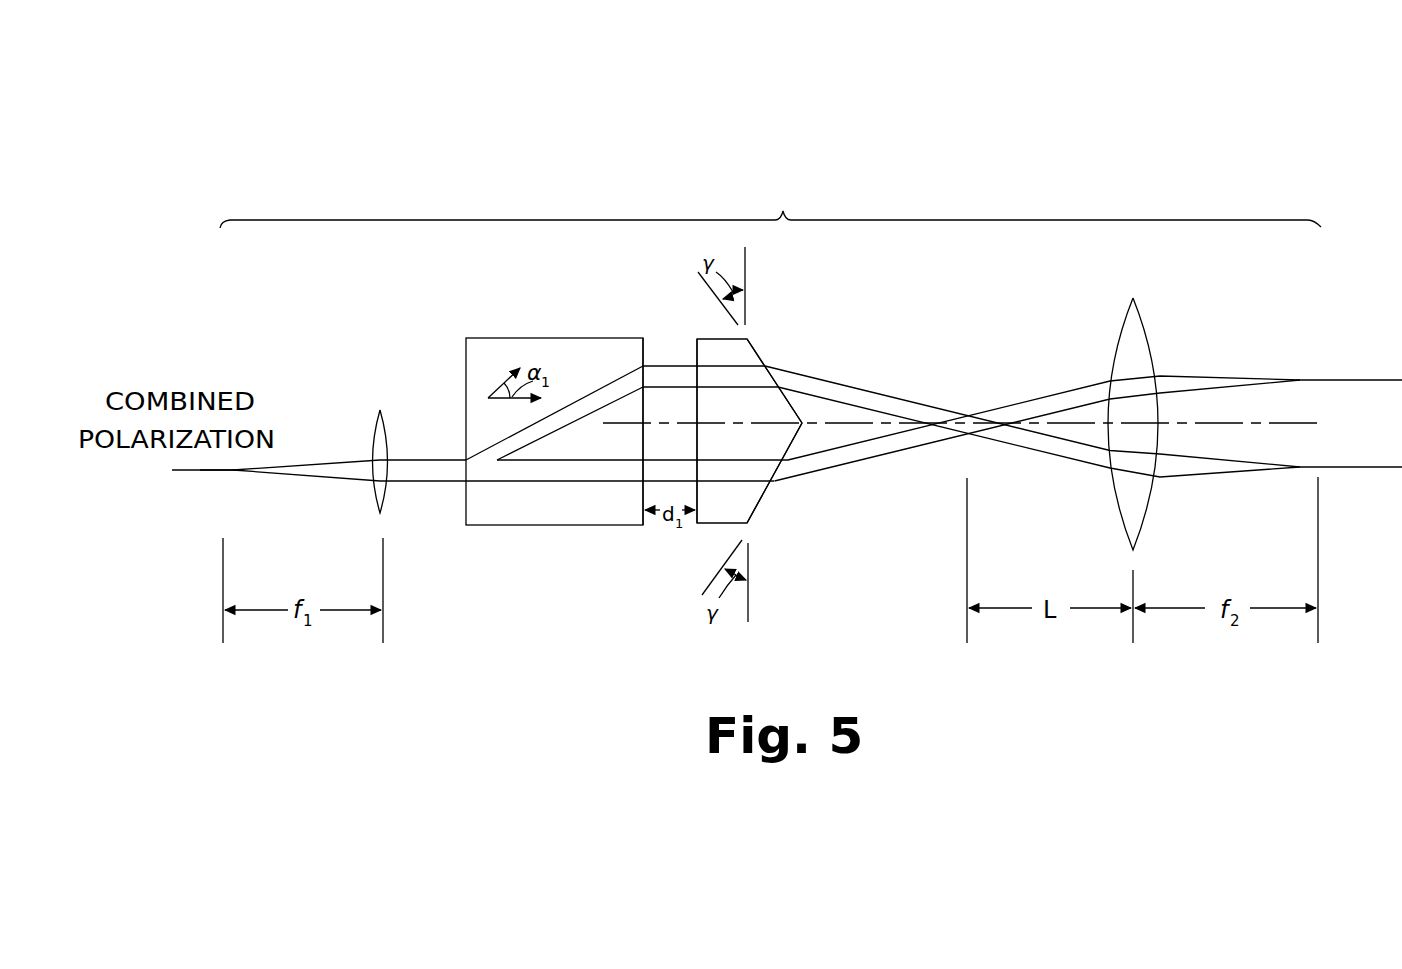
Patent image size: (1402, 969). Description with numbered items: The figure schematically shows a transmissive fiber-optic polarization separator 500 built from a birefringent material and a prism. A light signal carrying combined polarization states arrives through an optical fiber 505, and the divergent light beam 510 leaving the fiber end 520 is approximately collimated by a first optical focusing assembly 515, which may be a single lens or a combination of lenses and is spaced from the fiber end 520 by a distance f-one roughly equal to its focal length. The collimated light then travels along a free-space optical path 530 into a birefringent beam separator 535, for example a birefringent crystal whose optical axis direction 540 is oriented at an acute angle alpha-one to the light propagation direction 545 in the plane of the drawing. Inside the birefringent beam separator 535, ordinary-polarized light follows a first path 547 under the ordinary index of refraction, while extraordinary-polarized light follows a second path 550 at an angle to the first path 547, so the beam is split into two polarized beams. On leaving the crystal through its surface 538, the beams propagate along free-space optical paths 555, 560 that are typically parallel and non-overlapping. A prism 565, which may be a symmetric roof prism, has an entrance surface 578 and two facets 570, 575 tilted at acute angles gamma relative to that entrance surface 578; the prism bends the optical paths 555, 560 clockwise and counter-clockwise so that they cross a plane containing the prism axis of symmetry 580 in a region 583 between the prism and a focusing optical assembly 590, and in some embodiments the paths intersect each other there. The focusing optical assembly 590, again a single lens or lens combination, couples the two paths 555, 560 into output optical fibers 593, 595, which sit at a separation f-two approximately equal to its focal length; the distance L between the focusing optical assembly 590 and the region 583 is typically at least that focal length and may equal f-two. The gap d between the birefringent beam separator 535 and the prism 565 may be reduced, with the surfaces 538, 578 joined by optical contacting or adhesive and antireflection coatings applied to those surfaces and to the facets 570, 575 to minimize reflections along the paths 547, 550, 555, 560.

The transmissive fiber-optic polarization separator 500 is at (770, 205).
The optical fiber 505 is at (190, 479).
The divergent light beam 510 is at (291, 464).
The first optical focusing assembly 515 is at (380, 427).
The fiber end 520 is at (221, 471).
The free-space optical path 530 is at (413, 467).
The birefringent beam separator 535 is at (525, 338).
The surface of birefringent beam separator 538 is at (647, 348).
The optical axis direction 540 is at (500, 392).
The light propagation direction 545 is at (505, 401).
The first path 547 is at (557, 483).
The second path 550 is at (573, 420).
The free-space optical path 555 is at (658, 388).
The free-space optical path 560 is at (663, 448).
The prism 565 is at (707, 525).
The prism facet 570 is at (757, 353).
The prism facet 575 is at (760, 498).
The entrance surface 578 is at (700, 407).
The prism axis of symmetry 580 is at (832, 423).
The region 583 is at (965, 407).
The focusing optical assembly 590 is at (1145, 315).
The optical fiber 593 is at (1347, 468).
The optical fiber 595 is at (1345, 377).